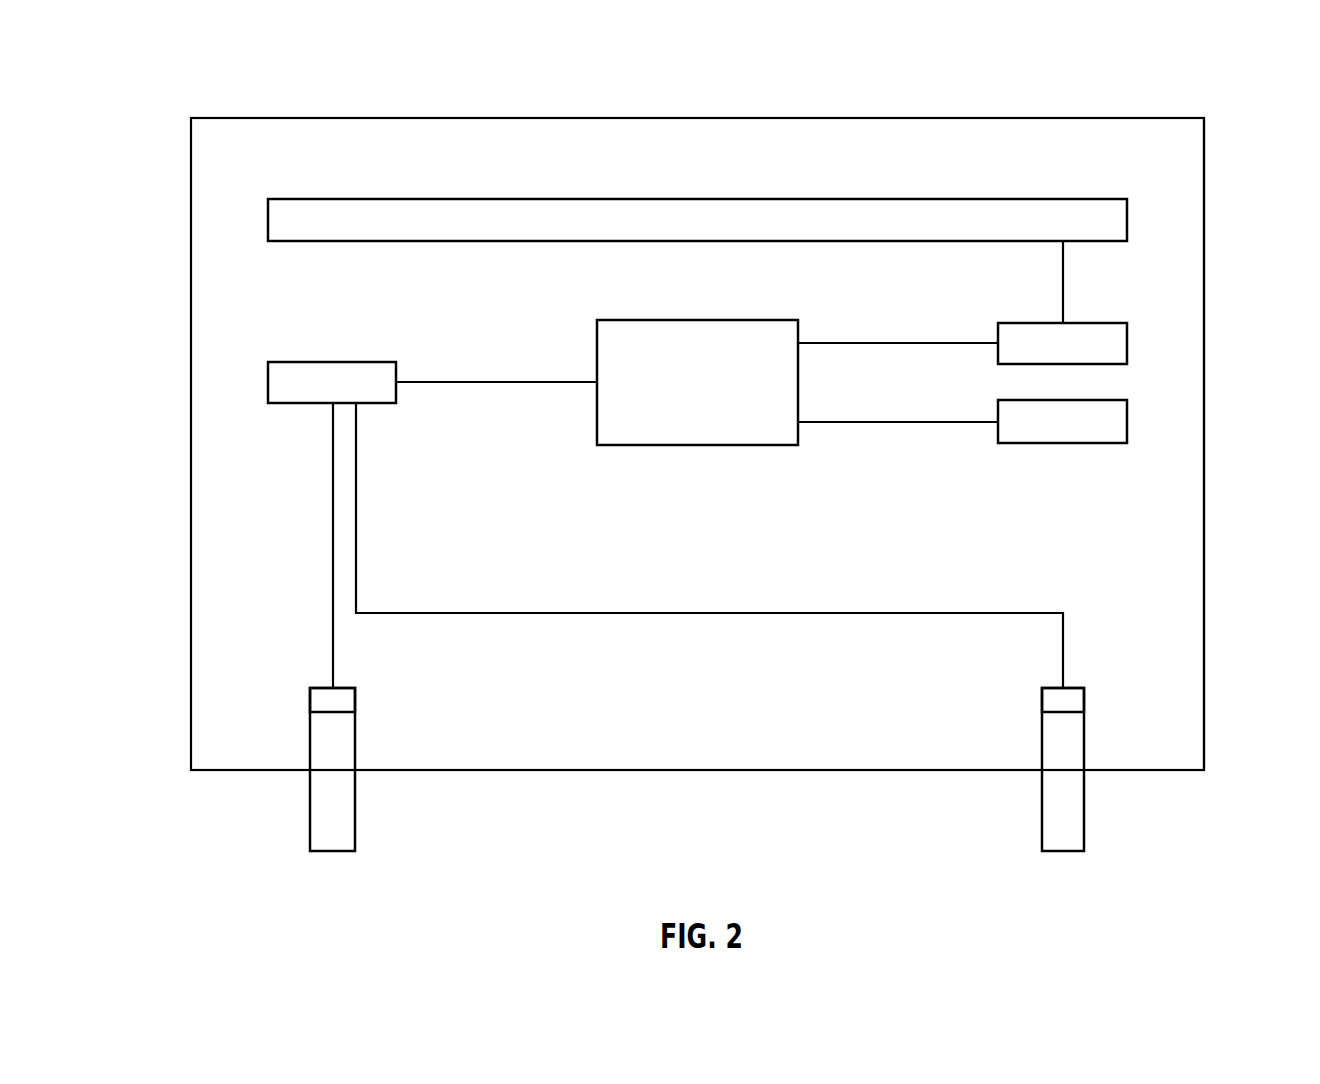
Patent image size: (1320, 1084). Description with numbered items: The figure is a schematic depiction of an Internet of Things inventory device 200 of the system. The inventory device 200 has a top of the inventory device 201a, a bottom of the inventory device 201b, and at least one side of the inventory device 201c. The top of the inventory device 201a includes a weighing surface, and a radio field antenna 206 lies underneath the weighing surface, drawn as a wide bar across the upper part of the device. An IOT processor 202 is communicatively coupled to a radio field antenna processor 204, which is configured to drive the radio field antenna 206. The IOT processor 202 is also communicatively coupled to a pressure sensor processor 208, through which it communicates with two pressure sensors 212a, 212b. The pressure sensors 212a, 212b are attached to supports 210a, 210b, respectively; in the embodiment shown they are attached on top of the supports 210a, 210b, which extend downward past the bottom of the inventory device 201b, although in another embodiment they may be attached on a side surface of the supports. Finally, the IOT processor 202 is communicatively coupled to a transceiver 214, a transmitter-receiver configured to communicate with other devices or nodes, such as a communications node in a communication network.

The IOT inventory device 200 is at (211, 96).
The top of the inventory device 201a is at (697, 118).
The bottom of the inventory device 201b is at (660, 770).
The side of the inventory device 201c is at (1204, 564).
The IOT processor 202 is at (758, 320).
The radio field antenna processor 204 is at (1127, 343).
The radio field antenna 206 is at (1127, 220).
The pressure sensor processor 208 is at (268, 383).
The support 210a is at (310, 806).
The support 210b is at (1040, 806).
The pressure sensor 212a is at (310, 700).
The pressure sensor 212b is at (1084, 700).
The transceiver 214 is at (1127, 421).